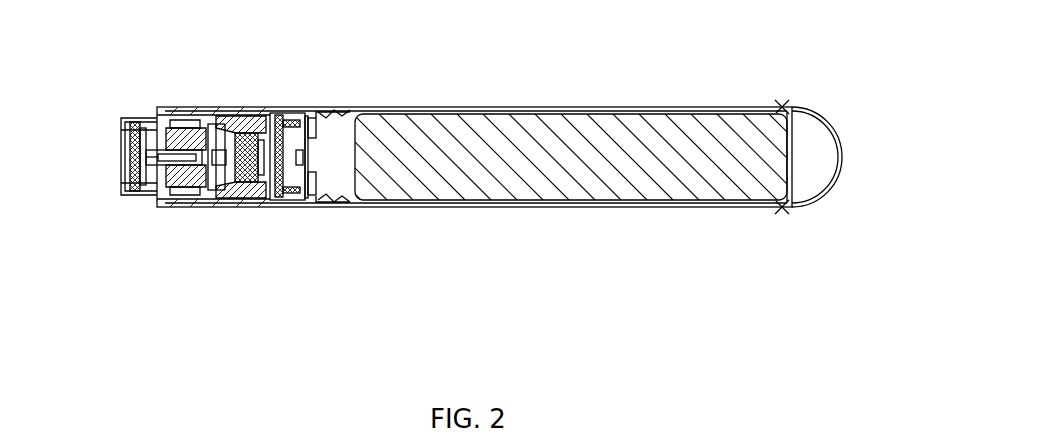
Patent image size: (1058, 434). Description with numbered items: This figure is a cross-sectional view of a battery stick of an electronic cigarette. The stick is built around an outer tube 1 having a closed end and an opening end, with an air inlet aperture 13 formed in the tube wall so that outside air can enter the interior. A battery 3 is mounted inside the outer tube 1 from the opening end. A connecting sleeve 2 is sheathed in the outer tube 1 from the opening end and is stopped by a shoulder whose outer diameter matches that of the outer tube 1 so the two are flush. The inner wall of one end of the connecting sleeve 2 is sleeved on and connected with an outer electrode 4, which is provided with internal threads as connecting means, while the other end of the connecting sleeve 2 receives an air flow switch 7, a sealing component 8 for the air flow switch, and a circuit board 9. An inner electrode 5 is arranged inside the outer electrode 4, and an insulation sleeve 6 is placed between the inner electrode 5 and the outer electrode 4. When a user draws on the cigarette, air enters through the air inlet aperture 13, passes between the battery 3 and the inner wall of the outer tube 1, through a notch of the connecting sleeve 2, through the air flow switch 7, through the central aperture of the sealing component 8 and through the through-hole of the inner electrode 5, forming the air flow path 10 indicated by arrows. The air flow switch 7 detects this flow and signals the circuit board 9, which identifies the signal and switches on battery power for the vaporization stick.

The outer tube 1 is at (847, 112).
The connecting sleeve 2 is at (229, 100).
The battery 3 is at (565, 103).
The outer electrode 4 is at (106, 99).
The inner electrode 5 is at (127, 164).
The insulation sleeve 6 is at (101, 198).
The air flow switch 7 is at (265, 213).
The sealing component 8 is at (211, 215).
The circuit board 9 is at (359, 212).
The air flow path 10 is at (338, 195).
The air inlet aperture 13 is at (474, 114).